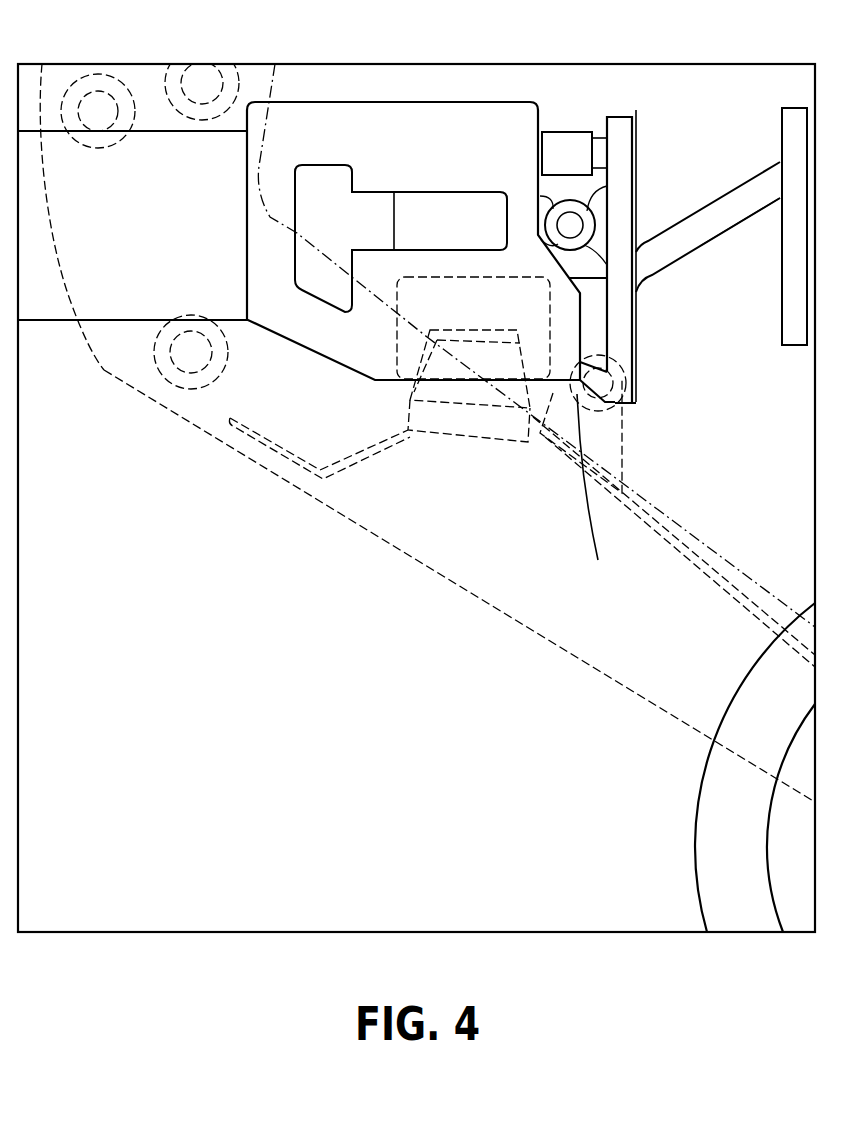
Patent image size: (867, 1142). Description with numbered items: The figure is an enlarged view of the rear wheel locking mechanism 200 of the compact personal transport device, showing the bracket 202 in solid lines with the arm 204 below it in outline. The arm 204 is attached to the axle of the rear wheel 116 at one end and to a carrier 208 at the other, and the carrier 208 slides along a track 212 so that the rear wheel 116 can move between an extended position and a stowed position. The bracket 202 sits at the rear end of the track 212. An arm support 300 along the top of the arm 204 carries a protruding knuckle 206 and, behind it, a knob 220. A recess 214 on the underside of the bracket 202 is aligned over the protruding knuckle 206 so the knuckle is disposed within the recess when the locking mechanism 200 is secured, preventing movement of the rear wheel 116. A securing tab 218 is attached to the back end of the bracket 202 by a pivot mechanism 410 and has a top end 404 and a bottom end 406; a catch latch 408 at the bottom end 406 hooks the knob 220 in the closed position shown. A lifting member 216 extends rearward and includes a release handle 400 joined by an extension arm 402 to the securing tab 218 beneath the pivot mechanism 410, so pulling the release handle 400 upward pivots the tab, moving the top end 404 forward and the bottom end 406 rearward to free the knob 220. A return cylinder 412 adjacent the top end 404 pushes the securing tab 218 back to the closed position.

The rear wheel 116 is at (695, 862).
The locking mechanism 200 is at (712, 101).
The bracket 202 is at (463, 102).
The arm 204 is at (505, 615).
The protruding knuckle 206 is at (493, 340).
The carrier 208 is at (98, 372).
The track 212 is at (40, 321).
The recess 214 is at (450, 302).
The lifting member 216 is at (780, 268).
The securing tab 218 is at (637, 323).
The knob 220 is at (625, 393).
The arm support 300 is at (467, 440).
The release handle 400 is at (790, 350).
The extension arm 402 is at (717, 205).
The top end 404 is at (636, 112).
The bottom end 406 is at (636, 403).
The catch latch 408 is at (599, 487).
The pivot mechanism 410 is at (569, 225).
The return cylinder 412 is at (573, 132).